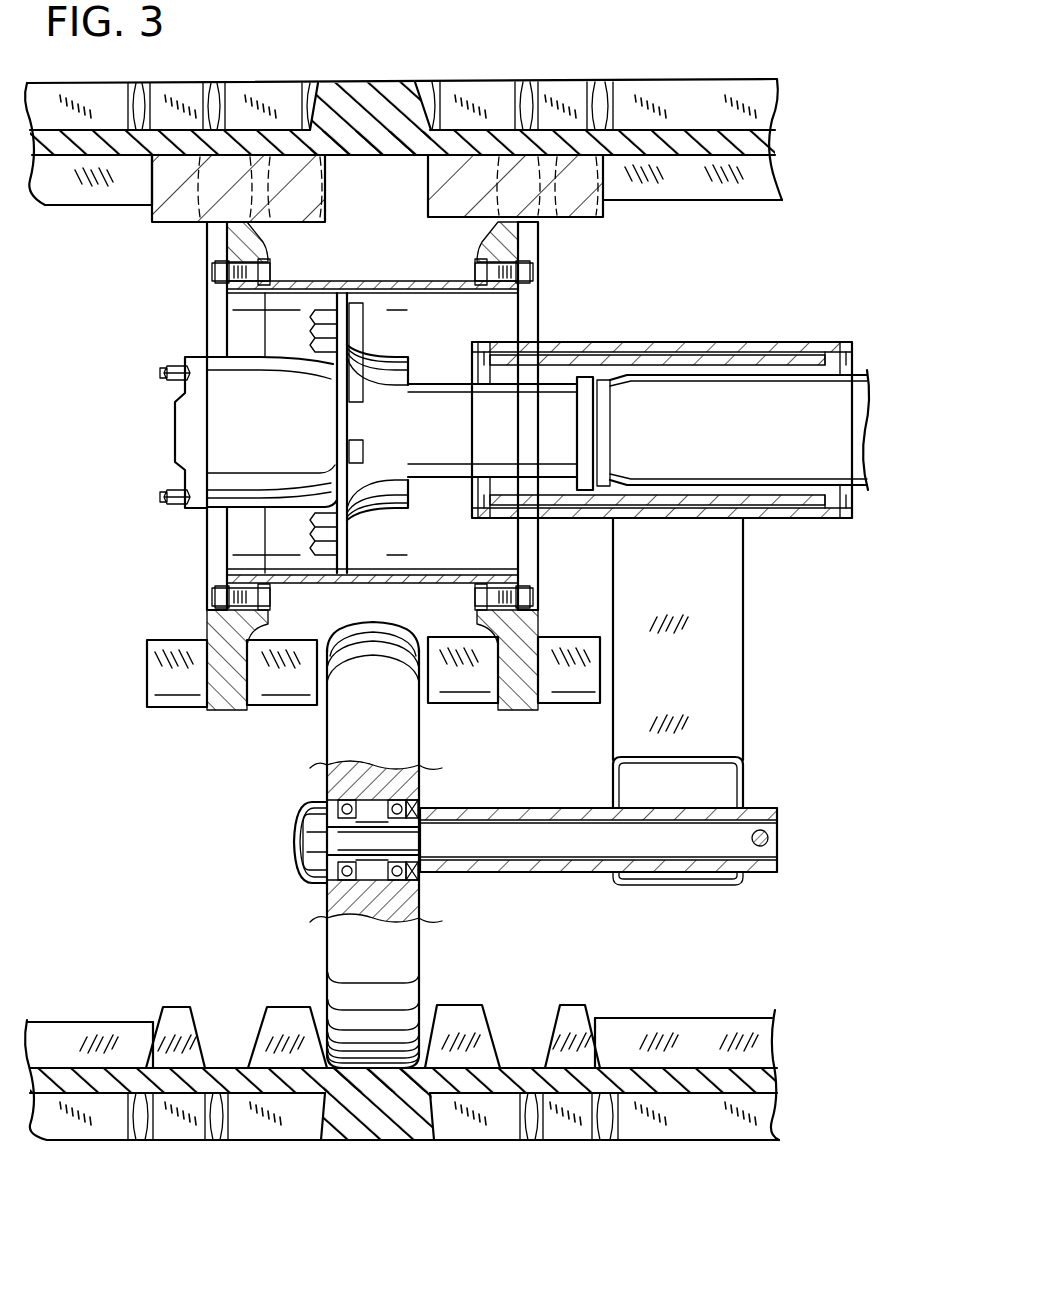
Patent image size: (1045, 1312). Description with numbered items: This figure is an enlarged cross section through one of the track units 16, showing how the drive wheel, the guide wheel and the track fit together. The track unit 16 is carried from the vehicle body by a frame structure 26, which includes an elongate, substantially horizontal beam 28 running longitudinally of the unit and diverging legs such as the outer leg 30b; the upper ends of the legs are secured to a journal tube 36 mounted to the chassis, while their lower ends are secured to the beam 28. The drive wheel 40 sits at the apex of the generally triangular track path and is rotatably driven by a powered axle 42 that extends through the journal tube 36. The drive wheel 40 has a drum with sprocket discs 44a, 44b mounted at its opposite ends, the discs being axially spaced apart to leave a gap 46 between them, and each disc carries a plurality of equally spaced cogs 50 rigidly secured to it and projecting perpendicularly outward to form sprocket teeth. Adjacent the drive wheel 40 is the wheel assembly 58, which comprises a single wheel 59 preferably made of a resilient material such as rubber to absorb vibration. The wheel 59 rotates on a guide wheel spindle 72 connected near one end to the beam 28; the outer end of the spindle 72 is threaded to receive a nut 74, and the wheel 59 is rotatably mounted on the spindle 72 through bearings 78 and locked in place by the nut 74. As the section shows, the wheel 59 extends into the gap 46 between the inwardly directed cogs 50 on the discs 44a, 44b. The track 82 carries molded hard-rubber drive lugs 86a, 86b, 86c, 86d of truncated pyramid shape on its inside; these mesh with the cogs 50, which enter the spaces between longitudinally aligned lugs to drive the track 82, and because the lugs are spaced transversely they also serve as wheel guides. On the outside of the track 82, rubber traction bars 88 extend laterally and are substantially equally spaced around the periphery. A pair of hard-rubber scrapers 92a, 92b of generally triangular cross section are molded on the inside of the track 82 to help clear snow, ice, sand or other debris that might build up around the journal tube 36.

The track unit 16 is at (664, 46).
The frame structure 26 is at (741, 639).
The beam 28 is at (722, 777).
The outer leg 30b is at (727, 646).
The journal tube 36 is at (692, 340).
The drive wheel 40 is at (178, 539).
The powered axle 42 is at (180, 337).
The sprocket disc 44a is at (206, 248).
The sprocket disc 44b is at (540, 248).
The gap 46 is at (327, 607).
The cog 50 is at (150, 209).
The wheel assembly 58 is at (278, 830).
The wheel 59 is at (373, 837).
The guide wheel spindle 72 is at (553, 848).
The nut 74 is at (316, 848).
The bearings 78 is at (397, 800).
The track 82 is at (402, 1064).
The drive lug 86a is at (176, 1020).
The drive lug 86b is at (273, 1020).
The drive lug 86c is at (478, 1020).
The drive lug 86d is at (577, 1020).
The traction bars 88 is at (115, 1135).
The scraper 92a is at (62, 195).
The scraper 92b is at (752, 205).